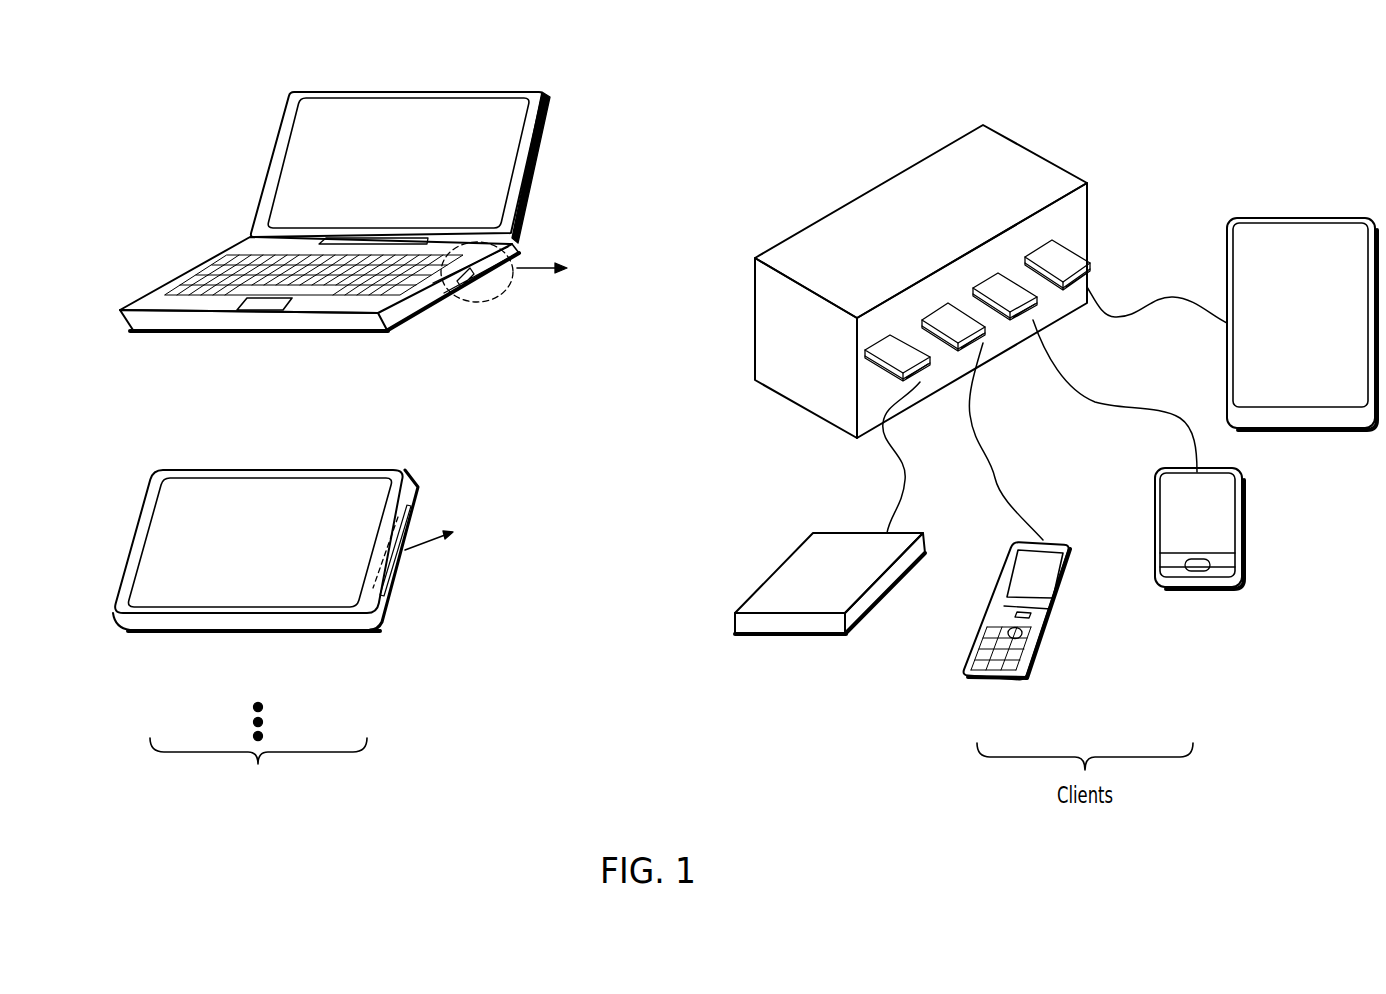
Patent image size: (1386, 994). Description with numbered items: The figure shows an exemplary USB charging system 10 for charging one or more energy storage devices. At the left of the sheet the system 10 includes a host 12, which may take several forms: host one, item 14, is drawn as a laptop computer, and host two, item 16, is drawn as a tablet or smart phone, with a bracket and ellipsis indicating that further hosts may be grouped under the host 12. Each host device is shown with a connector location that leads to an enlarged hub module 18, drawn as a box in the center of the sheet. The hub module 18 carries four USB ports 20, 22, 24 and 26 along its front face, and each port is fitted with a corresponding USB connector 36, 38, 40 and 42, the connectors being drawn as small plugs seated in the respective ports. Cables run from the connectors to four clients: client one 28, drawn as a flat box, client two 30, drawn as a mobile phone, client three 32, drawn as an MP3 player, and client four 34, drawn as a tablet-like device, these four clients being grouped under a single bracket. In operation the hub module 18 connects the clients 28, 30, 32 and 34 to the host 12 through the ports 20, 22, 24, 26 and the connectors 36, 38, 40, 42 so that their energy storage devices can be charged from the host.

The USB charging system 10 is at (560, 810).
The host 12 is at (287, 797).
The host 1 14 is at (313, 380).
The host 2 16 is at (287, 668).
The hub module 18 is at (488, 294).
The USB port 20 is at (930, 363).
The USB port 22 is at (985, 328).
The USB port 24 is at (1037, 300).
The USB port 26 is at (1090, 272).
The client 1 28 is at (890, 593).
The client 2 30 is at (1040, 653).
The client 3 32 is at (1245, 523).
The client 4 34 is at (1302, 218).
The USB connector 36 is at (882, 345).
The USB connector 38 is at (940, 312).
The USB connector 40 is at (992, 285).
The USB connector 42 is at (1043, 250).